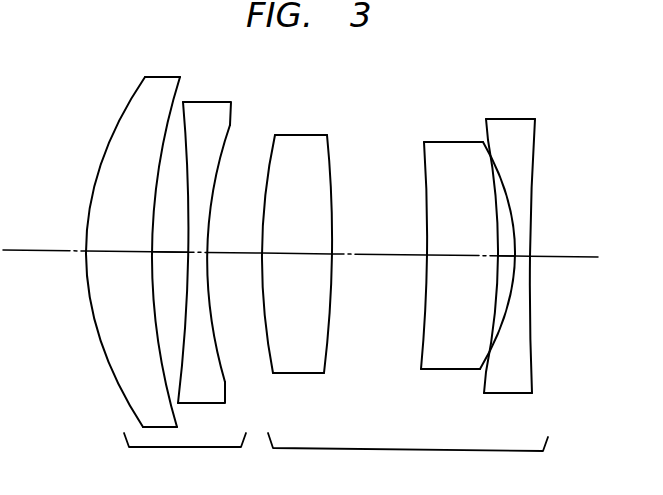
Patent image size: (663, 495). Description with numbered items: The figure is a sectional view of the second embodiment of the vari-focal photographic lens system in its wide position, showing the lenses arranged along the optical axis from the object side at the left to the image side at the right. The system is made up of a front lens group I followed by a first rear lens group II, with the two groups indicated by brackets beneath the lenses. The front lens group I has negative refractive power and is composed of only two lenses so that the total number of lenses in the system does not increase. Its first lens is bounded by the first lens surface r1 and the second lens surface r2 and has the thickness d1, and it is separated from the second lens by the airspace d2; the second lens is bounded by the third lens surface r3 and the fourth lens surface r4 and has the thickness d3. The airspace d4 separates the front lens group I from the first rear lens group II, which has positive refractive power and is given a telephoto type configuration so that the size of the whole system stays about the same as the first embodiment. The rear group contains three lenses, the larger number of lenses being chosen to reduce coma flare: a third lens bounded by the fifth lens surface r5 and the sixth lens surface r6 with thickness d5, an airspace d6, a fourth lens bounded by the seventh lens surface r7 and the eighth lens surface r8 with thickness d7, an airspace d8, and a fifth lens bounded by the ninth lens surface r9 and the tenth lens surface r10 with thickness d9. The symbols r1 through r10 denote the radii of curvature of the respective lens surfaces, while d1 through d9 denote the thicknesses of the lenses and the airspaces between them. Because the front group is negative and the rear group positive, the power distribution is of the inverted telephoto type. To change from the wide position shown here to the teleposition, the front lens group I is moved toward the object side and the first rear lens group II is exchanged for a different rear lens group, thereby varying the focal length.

The radius of curvature of first lens surface r1 is at (144, 78).
The radius of curvature of second lens surface r2 is at (179, 79).
The radius of curvature of third lens surface r3 is at (185, 103).
The radius of curvature of fourth lens surface r4 is at (231, 118).
The radius of curvature of fifth lens surface r5 is at (273, 136).
The radius of curvature of sixth lens surface r6 is at (331, 140).
The radius of curvature of seventh lens surface r7 is at (423, 144).
The radius of curvature of eighth lens surface r8 is at (482, 144).
The radius of curvature of ninth lens surface r9 is at (491, 134).
The radius of curvature of tenth lens surface r10 is at (536, 128).
The thickness of first lens d1 is at (114, 252).
The airspace between first and second lenses d2 is at (165, 252).
The thickness of second lens d3 is at (203, 252).
The airspace between second and third lenses d4 is at (229, 253).
The thickness of third lens d5 is at (291, 254).
The airspace between third and fourth lenses d6 is at (367, 254).
The thickness of fourth lens d7 is at (449, 256).
The airspace between fourth and fifth lenses d8 is at (502, 256).
The thickness of fifth lens d9 is at (523, 257).
The front lens group I is at (185, 452).
The first rear lens group II is at (408, 453).